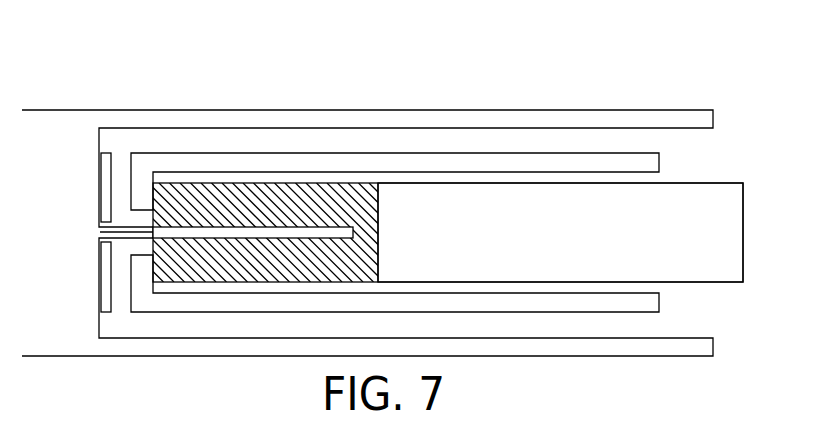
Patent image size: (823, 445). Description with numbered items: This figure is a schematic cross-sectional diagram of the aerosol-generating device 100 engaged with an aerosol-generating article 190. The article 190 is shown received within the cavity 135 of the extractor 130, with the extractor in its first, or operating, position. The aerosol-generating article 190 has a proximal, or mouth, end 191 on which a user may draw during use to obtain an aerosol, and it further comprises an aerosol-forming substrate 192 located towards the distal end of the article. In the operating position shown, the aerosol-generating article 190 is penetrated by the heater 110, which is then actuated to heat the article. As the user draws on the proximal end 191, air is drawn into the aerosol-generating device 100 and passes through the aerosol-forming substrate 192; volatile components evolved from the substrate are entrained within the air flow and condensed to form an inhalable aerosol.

The aerosol-generating device 100 is at (518, 79).
The heater blade 110 is at (100, 232).
The extractor 130 is at (659, 162).
The cavity 135 is at (655, 288).
The aerosol-generating article 190 is at (435, 199).
The proximal end 191 is at (743, 232).
The aerosol-forming substrate 192 is at (378, 212).